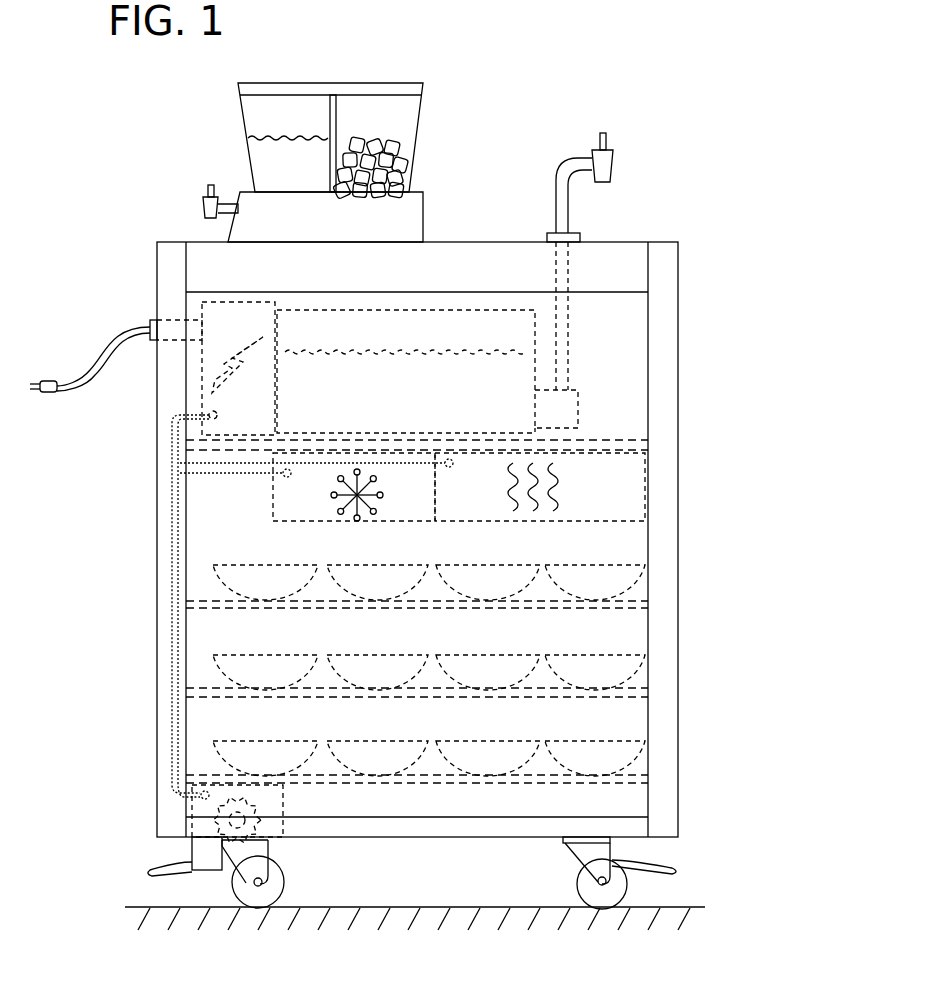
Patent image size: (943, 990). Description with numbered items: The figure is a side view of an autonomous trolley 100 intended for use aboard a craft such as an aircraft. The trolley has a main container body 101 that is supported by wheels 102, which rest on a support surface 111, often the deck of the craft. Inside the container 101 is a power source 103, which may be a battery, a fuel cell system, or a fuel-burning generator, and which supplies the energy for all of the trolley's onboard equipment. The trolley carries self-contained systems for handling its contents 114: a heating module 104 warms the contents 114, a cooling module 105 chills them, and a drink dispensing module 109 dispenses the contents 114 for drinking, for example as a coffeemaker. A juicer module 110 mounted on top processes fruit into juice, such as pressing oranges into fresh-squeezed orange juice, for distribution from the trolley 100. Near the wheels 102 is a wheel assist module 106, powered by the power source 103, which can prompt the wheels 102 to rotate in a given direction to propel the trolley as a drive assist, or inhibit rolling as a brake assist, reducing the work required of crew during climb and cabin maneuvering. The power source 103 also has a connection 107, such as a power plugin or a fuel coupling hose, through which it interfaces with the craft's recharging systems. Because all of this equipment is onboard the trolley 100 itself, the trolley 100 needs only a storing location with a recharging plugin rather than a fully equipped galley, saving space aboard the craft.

The autonomous trolley 100 is at (735, 290).
The main container body 101 is at (695, 528).
The wheels 102 is at (263, 893).
The power source 103 is at (215, 367).
The heating module 104 is at (620, 495).
The cooling module 105 is at (287, 506).
The wheel assist module 106 is at (200, 810).
The connection 107 is at (56, 382).
The drink dispensing module 109 is at (610, 160).
The juicer module 110 is at (415, 113).
The support surface 111 is at (705, 890).
The contents 114 is at (517, 375).